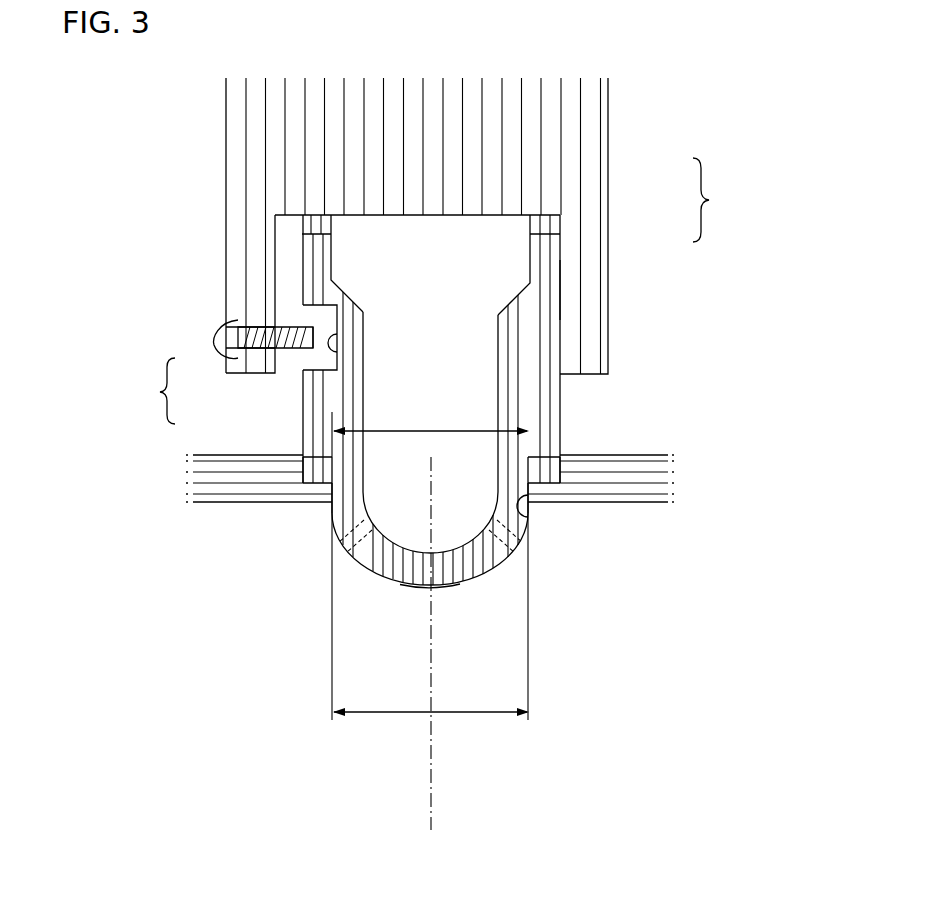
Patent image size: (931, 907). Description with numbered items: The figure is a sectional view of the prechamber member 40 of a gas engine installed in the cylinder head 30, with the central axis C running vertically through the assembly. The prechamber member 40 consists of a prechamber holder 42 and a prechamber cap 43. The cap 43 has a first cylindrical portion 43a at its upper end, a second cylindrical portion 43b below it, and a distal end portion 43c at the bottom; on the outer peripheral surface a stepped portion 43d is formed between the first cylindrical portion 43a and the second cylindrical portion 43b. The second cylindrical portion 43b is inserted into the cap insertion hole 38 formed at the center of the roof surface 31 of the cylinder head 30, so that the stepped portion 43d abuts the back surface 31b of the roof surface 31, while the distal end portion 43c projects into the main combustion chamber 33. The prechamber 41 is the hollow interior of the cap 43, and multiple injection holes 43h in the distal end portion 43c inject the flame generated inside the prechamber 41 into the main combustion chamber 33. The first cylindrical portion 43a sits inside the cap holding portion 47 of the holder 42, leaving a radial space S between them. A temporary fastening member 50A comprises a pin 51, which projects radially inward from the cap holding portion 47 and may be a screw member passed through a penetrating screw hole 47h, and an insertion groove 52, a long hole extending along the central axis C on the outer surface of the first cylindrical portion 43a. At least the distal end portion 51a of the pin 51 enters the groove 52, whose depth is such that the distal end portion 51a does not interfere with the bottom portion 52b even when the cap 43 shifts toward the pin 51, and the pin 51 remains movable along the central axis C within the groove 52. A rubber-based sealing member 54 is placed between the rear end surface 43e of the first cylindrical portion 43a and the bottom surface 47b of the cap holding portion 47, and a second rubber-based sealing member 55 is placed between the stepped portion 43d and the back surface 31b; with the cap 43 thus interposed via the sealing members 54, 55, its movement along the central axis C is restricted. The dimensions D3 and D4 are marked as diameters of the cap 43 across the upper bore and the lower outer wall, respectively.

The cylinder head 30 is at (655, 508).
The roof surface 31 is at (203, 503).
The back surface 31b is at (195, 455).
The main combustion chamber 33 is at (601, 672).
The cap insertion hole 38 is at (532, 506).
The prechamber member 40 is at (715, 200).
The prechamber 41 is at (455, 348).
The prechamber holder 42 is at (608, 160).
The prechamber cap 43 is at (560, 265).
The first cylindrical portion 43a is at (560, 289).
The second cylindrical portion 43b is at (332, 494).
The distal end portion 43c is at (407, 588).
The stepped portion 43d is at (548, 468).
The rear end surface 43e is at (307, 230).
The injection holes 43h is at (494, 545).
The cap holding portion 47 is at (278, 242).
The bottom surface 47b is at (472, 217).
The penetrating screw hole 47h is at (228, 340).
The temporary fastening member 50A is at (143, 391).
The pin 51 is at (302, 365).
The distal end portion 51a is at (313, 326).
The insertion groove 52 is at (322, 370).
The bottom portion 52b is at (328, 342).
The sealing member 54 is at (320, 222).
The sealing member 55 is at (302, 474).
The space S is at (290, 299).
The central axis C is at (434, 830).
The diameter D3 is at (431, 413).
The diameter D4 is at (431, 730).